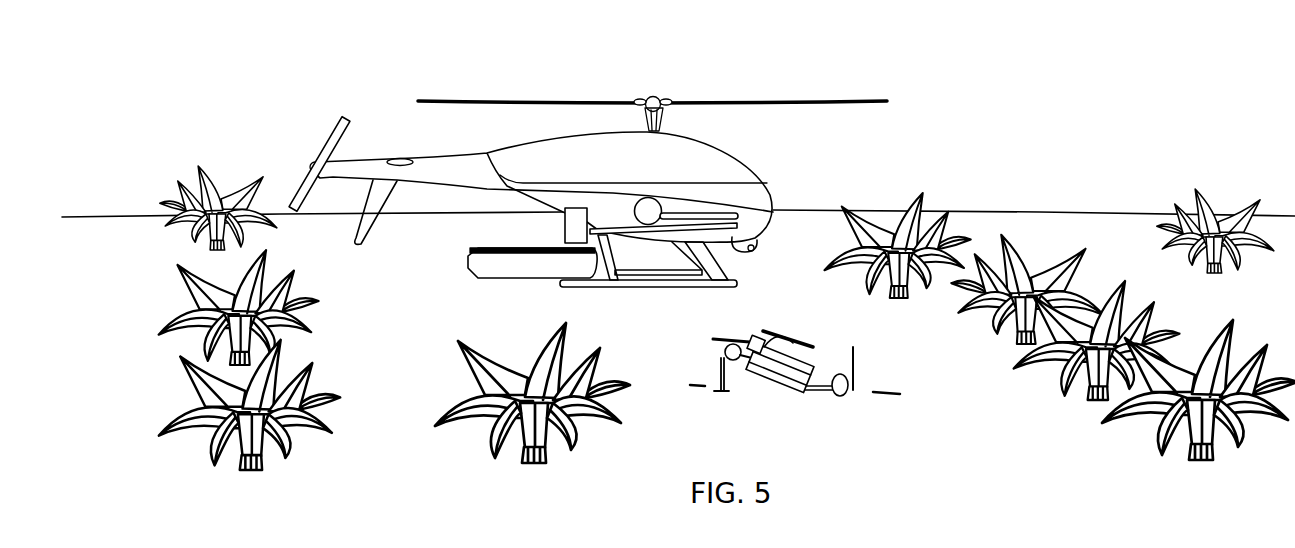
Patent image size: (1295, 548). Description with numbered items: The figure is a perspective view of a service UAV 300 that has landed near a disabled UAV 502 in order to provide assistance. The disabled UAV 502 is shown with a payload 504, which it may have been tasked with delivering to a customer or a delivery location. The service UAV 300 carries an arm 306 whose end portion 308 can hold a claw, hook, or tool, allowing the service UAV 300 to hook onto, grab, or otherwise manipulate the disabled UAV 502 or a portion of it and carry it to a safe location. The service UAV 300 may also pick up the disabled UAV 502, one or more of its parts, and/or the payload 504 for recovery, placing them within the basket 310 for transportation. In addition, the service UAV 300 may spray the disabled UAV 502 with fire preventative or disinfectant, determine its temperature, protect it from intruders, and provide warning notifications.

The service UAV 300 is at (477, 77).
The arm 306 is at (703, 213).
The end portion 308 is at (575, 238).
The basket 310 is at (467, 262).
The disabled UAV 502 is at (795, 398).
The payload 504 is at (780, 387).